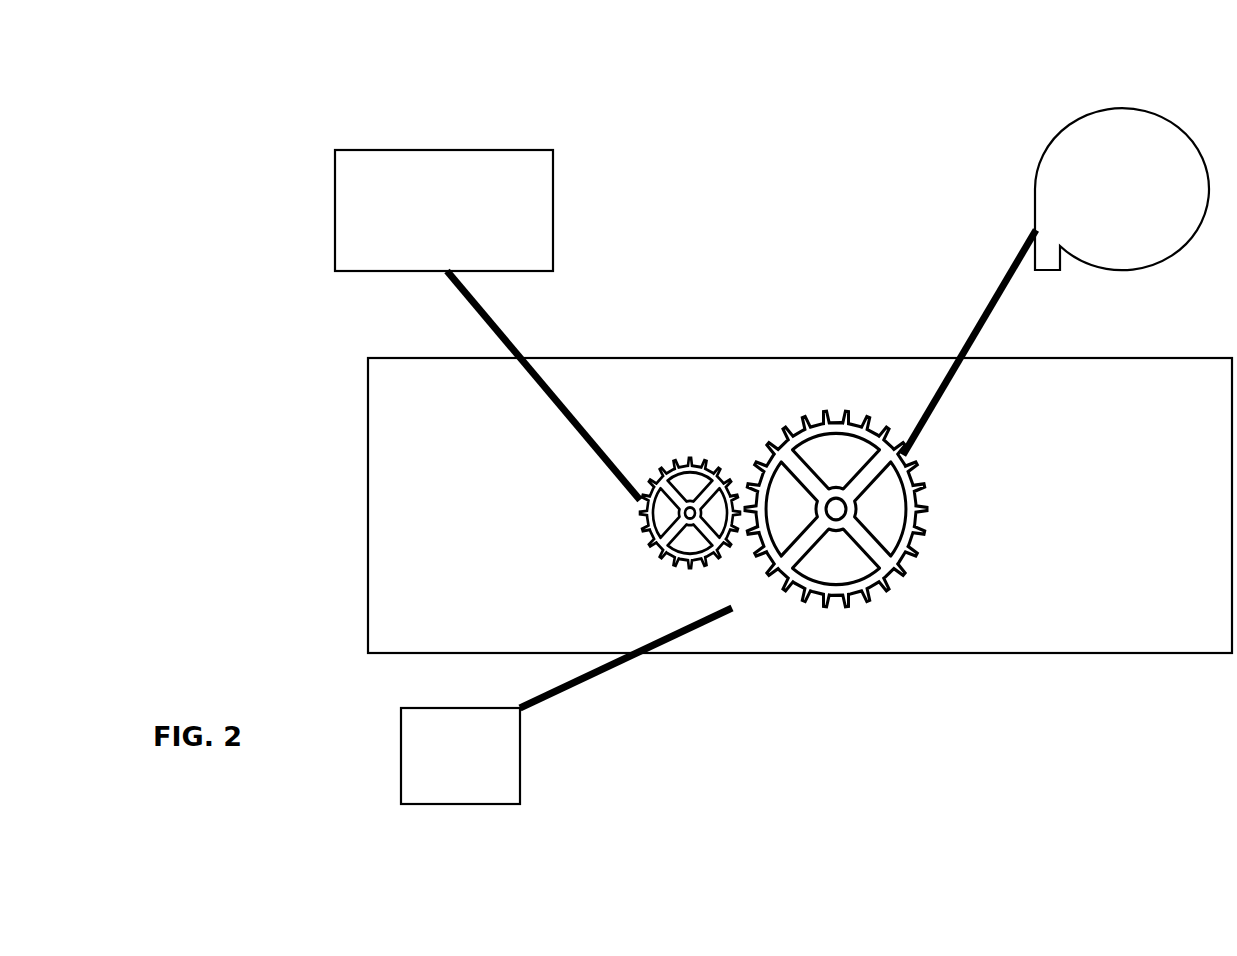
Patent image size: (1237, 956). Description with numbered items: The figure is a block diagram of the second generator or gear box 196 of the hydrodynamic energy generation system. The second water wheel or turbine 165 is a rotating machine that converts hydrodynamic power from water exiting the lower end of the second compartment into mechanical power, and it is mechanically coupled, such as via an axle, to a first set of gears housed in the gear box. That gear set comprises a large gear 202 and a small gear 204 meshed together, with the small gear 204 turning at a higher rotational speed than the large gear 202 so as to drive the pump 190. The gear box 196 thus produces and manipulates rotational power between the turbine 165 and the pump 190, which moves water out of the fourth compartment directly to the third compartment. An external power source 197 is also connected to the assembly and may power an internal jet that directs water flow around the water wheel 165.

The second generator or gear box 196 is at (302, 120).
The pump 190 is at (447, 150).
The second water wheel or turbine 165 is at (1100, 108).
The small gear 204 is at (693, 457).
The large gear 202 is at (913, 558).
The power source 197 is at (400, 772).